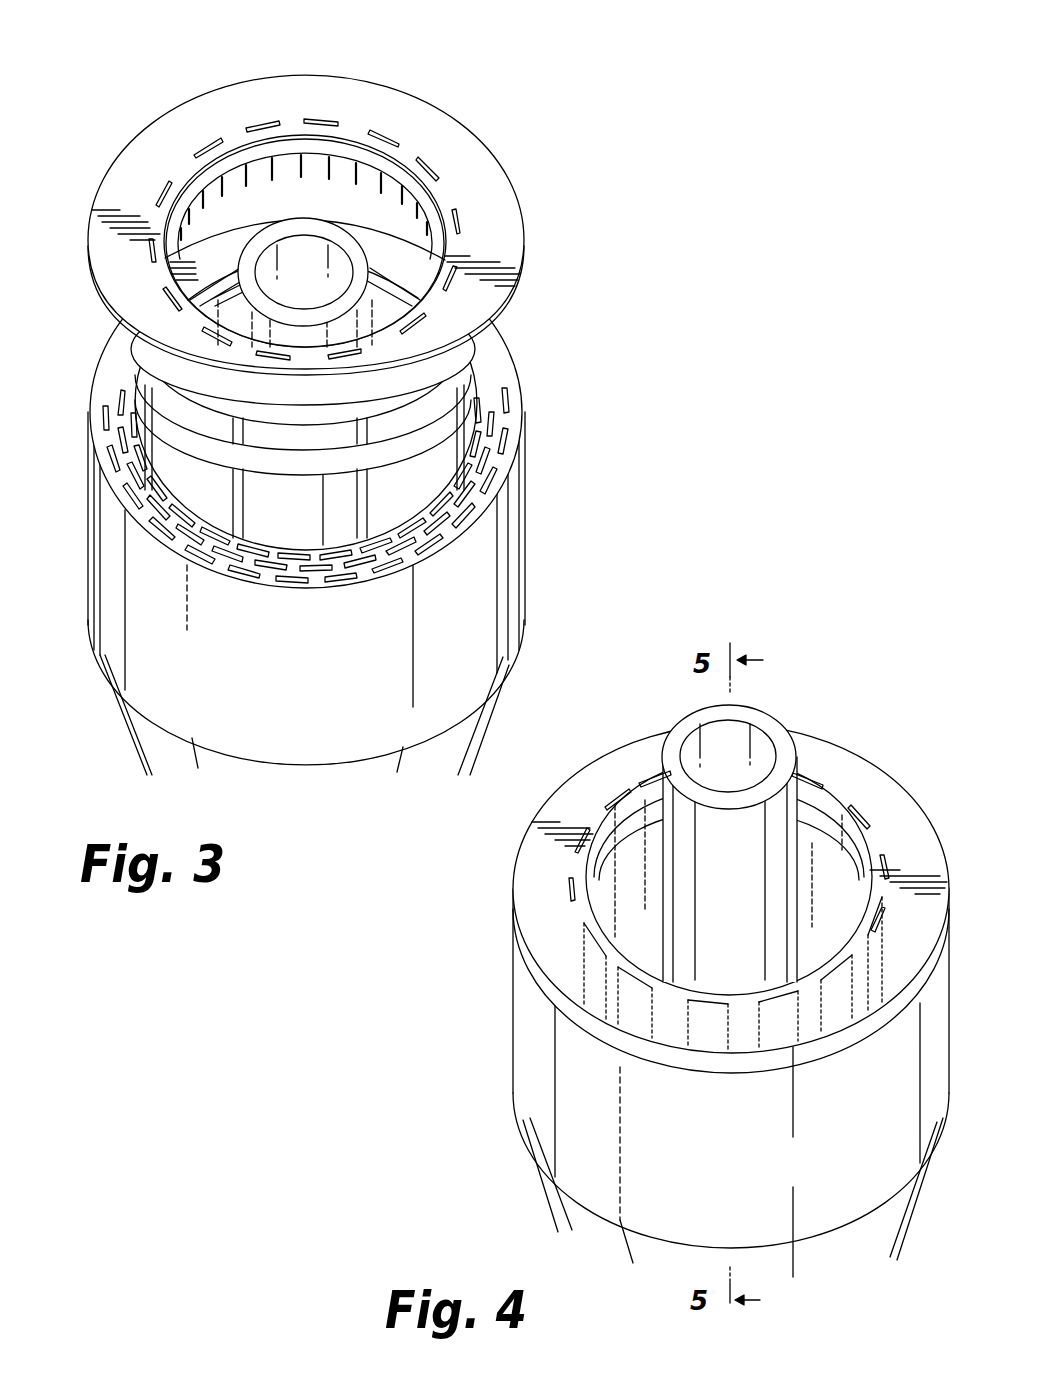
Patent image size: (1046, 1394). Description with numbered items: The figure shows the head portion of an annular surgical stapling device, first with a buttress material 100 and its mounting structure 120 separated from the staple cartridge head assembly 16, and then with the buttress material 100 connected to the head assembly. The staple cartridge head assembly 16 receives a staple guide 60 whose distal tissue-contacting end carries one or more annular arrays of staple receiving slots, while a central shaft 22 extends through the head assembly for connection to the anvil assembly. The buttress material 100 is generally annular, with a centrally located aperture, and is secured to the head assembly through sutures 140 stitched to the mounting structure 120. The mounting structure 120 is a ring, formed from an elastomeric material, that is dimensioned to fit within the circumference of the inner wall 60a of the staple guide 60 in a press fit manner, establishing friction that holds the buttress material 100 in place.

In FIG. 3, the staple cartridge head assembly 16 is at (73, 533).
In FIG. 4, the staple cartridge head assembly 16 is at (504, 1062).
In FIG. 3, the central shaft 22 is at (262, 237).
In FIG. 4, the central shaft 22 is at (670, 755).
In FIG. 3, the staple guide 60 is at (97, 364).
In FIG. 3, the inner wall 60a is at (412, 490).
In FIG. 3, the buttress material 100 is at (493, 188).
In FIG. 4, the buttress material 100 is at (913, 830).
In FIG. 3, the mounting structure 120 is at (365, 240).
In FIG. 4, the mounting structure 120 is at (817, 850).
In FIG. 3, the sutures 140 is at (198, 150).
In FIG. 4, the sutures 140 is at (862, 817).